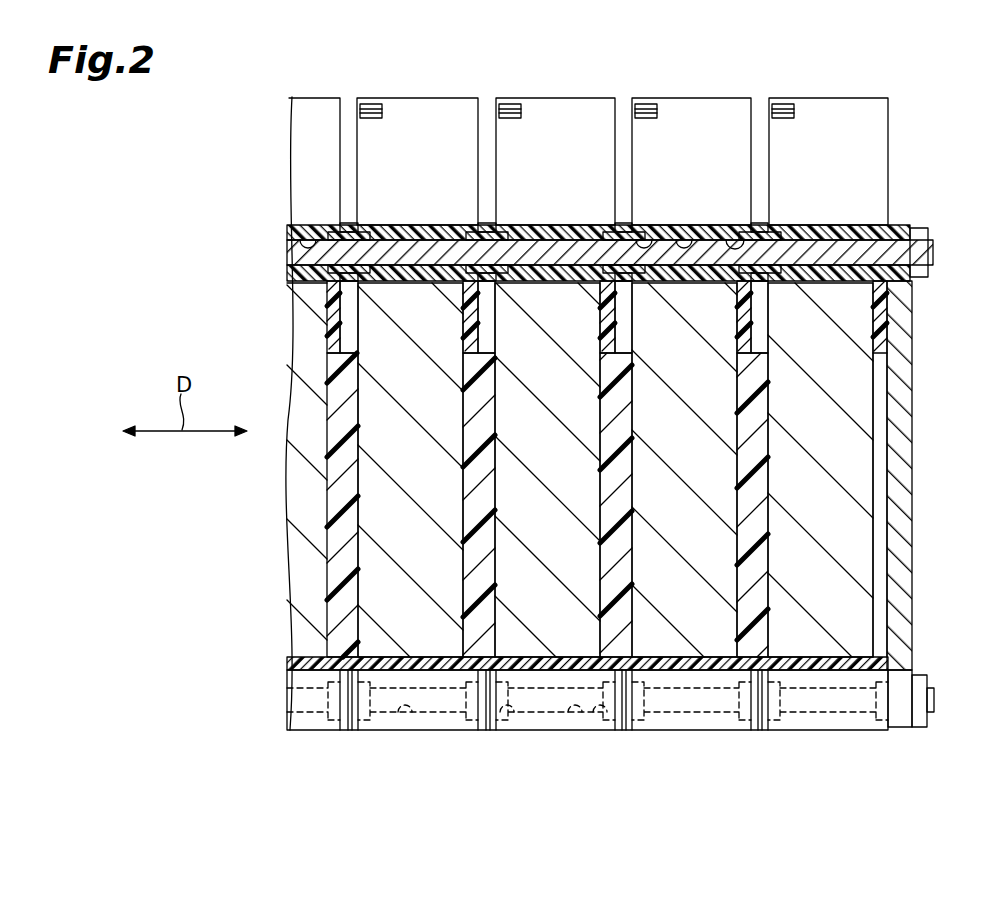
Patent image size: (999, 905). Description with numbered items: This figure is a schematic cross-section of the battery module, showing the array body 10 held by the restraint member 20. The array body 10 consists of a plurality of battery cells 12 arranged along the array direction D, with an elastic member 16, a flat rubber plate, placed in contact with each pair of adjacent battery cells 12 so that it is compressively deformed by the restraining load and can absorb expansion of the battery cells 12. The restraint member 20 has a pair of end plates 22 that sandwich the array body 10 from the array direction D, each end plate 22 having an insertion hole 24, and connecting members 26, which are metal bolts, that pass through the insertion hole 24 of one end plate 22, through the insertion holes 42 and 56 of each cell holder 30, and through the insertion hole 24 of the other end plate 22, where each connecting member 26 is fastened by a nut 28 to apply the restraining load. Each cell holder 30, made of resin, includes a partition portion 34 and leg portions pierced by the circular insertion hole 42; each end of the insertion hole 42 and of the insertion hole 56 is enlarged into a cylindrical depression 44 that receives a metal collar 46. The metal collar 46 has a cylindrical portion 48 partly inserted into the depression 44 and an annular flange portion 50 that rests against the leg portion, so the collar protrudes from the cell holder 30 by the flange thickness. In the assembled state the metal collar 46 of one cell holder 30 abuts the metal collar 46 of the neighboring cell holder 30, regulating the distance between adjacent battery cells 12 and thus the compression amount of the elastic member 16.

The array body 10 is at (345, 84).
The battery cell 12 is at (390, 607).
The elastic member 16 is at (547, 538).
The restraint member 20 is at (642, 475).
The end plate 22 is at (905, 445).
The insertion hole 24 is at (935, 252).
The connecting member 26 is at (823, 253).
The nut 28 is at (930, 236).
The cell holder 30 is at (420, 105).
The partition portion 34 is at (468, 320).
The insertion hole 42 is at (405, 717).
The depression 44 is at (644, 247).
The metal collar 46 is at (536, 479).
The cylindrical portion 48 is at (364, 237).
The flange portion 50 is at (357, 228).
The insertion hole 56 is at (308, 247).